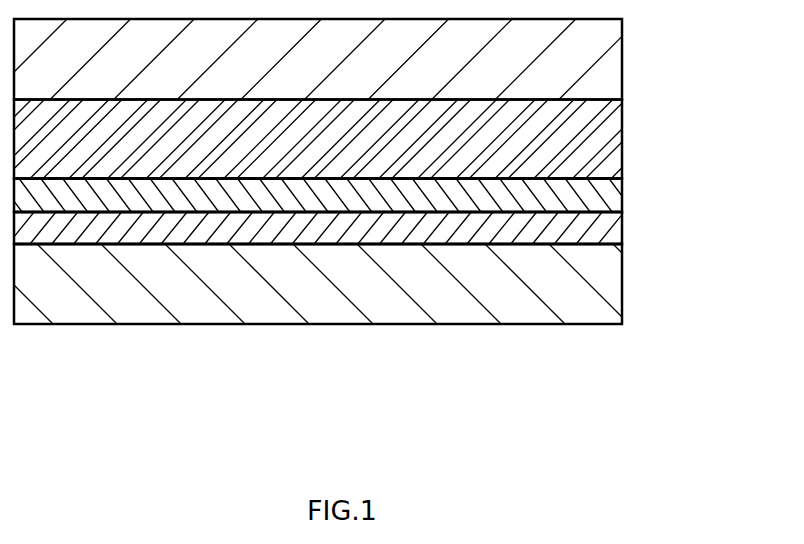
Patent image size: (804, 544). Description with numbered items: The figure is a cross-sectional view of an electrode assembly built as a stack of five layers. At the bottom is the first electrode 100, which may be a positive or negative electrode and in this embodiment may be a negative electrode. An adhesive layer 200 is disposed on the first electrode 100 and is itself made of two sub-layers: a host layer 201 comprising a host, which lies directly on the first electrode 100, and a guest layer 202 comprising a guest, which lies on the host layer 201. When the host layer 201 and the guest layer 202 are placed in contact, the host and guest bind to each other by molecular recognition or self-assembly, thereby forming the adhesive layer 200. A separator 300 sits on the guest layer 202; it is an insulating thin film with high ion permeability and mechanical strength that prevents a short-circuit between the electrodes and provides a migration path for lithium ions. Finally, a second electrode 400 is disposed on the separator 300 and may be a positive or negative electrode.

The first electrode 100 is at (613, 285).
The adhesive layer 200 is at (708, 188).
The host layer 201 is at (613, 228).
The guest layer 202 is at (613, 197).
The separator 300 is at (613, 141).
The second electrode 400 is at (613, 59).